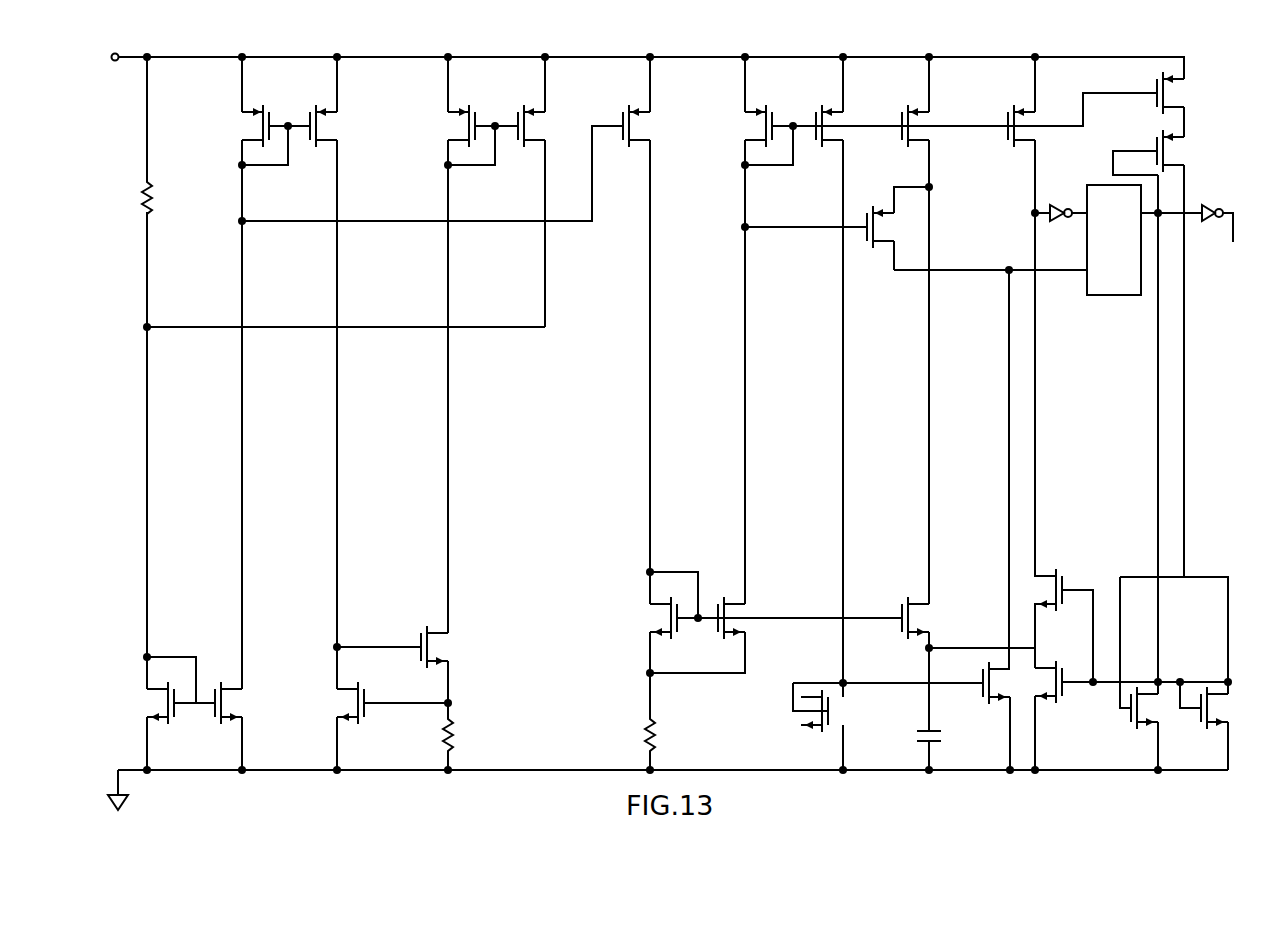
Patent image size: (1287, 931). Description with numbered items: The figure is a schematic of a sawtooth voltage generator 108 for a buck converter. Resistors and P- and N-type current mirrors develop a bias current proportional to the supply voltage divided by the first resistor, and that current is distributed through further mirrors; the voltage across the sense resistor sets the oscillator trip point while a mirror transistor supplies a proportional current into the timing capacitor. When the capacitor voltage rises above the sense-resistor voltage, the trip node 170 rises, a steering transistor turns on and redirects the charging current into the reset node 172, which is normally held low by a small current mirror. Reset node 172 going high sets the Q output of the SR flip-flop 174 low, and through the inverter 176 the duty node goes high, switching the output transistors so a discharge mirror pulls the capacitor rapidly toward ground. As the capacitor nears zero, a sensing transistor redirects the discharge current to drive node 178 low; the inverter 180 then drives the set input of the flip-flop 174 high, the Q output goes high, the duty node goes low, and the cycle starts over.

The sawtooth voltage generator 108 is at (413, 42).
The trip node 170 is at (929, 306).
The reset node 172 is at (1009, 262).
The SR flip-flop 174 is at (1115, 297).
The inverter 176 is at (1212, 210).
The node at drain of MP18 178 is at (1033, 180).
The inverter 180 is at (1060, 207).